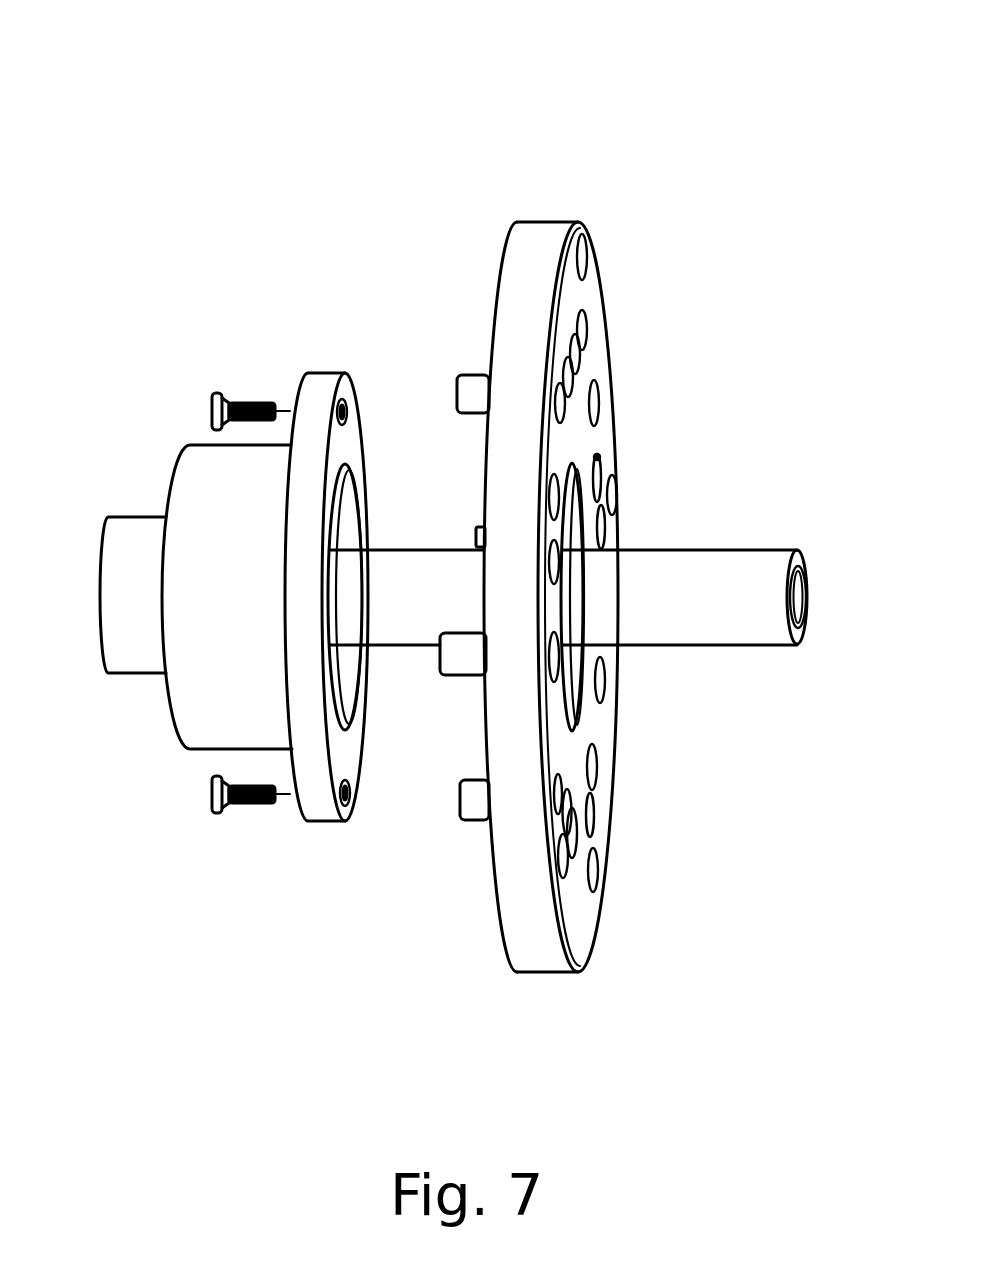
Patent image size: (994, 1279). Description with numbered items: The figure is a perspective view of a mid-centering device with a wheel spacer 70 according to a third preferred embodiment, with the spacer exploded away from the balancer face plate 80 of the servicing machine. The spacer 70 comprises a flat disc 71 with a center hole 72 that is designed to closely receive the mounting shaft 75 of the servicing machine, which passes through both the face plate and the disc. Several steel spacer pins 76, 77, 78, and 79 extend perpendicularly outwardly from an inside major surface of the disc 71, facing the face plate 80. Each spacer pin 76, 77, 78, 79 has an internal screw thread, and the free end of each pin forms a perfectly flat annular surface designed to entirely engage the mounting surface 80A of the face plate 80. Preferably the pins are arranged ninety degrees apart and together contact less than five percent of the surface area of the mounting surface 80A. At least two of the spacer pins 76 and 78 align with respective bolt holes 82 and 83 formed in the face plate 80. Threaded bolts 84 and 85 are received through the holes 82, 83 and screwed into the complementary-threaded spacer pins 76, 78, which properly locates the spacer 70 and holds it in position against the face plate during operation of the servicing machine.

The wheel spacer 70 is at (553, 198).
The flat disc 71 is at (502, 267).
The center hole 72 is at (577, 585).
The mounting shaft 75 is at (692, 622).
The spacer pin 76 is at (455, 397).
The spacer pin 77 is at (477, 535).
The spacer pin 78 is at (460, 800).
The spacer pin 79 is at (453, 663).
The balancer face plate 80 is at (308, 821).
The mounting surface 80A is at (348, 433).
The bolt hole 82 is at (348, 408).
The bolt hole 83 is at (352, 787).
The threaded bolt 84 is at (230, 395).
The threaded bolt 85 is at (213, 793).